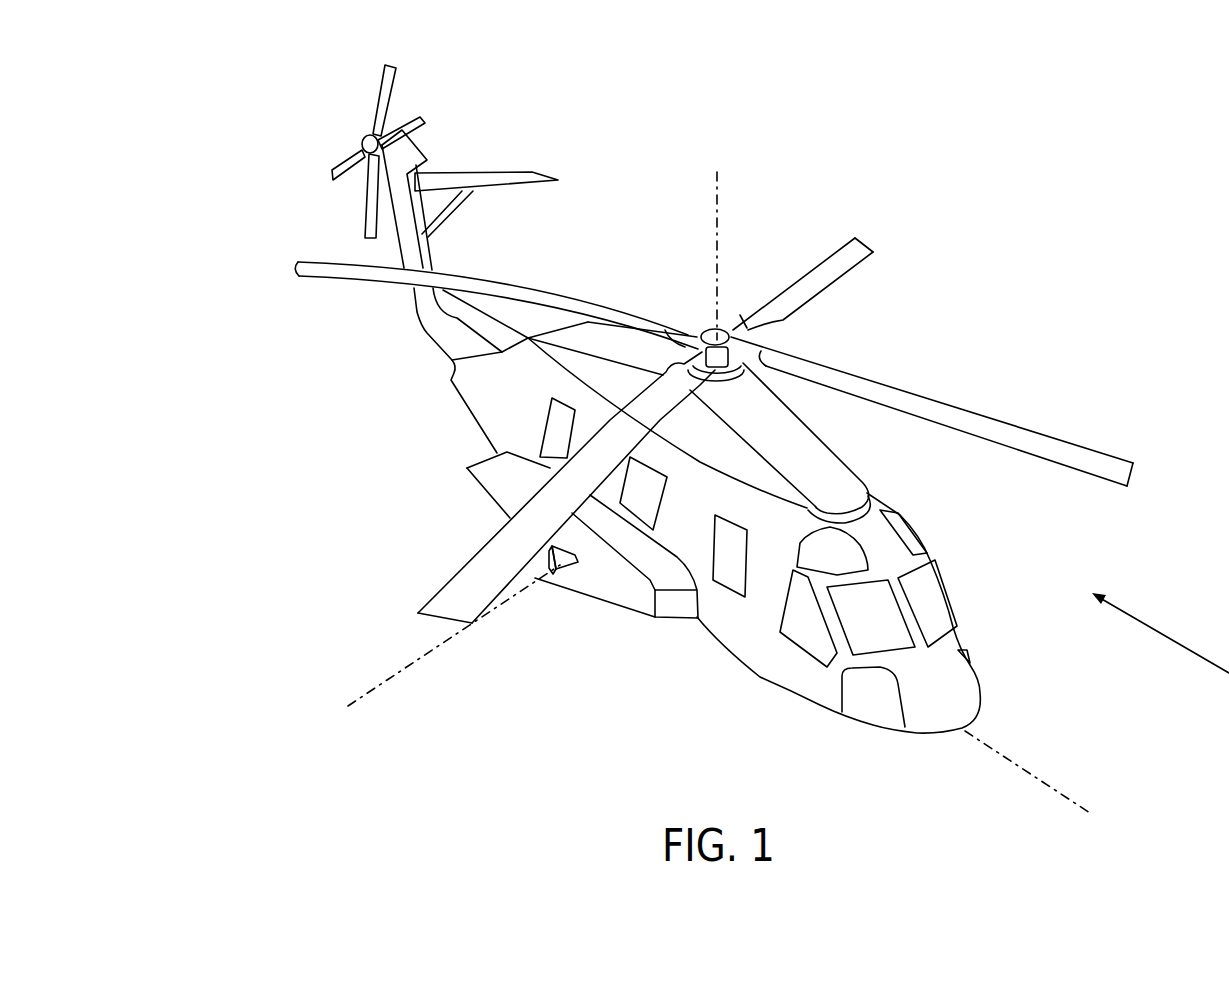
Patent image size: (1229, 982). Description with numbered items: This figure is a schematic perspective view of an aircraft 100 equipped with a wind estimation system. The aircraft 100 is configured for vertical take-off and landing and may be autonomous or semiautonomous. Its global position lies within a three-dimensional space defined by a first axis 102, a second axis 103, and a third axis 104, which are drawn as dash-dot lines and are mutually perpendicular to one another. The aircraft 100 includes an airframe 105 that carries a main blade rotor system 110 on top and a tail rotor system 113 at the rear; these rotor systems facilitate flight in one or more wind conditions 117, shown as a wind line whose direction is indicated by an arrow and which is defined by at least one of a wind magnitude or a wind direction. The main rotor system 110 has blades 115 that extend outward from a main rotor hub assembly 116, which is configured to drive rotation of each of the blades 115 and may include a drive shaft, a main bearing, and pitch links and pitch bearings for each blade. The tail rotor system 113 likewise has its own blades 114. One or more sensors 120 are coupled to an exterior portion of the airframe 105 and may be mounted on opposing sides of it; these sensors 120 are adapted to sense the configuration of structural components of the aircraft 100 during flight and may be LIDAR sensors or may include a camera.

The aircraft 100 is at (330, 213).
The first axis 102 is at (712, 183).
The second axis 103 is at (1041, 783).
The third axis 104 is at (398, 671).
The airframe 105 is at (460, 430).
The main blade rotor system 110 is at (805, 336).
The tail rotor system 113 is at (446, 128).
The blades 114 is at (370, 84).
The blades 115 is at (346, 302).
The main rotor hub assembly 116 is at (690, 330).
The wind conditions 117 is at (1177, 642).
The sensors 120 is at (552, 578).